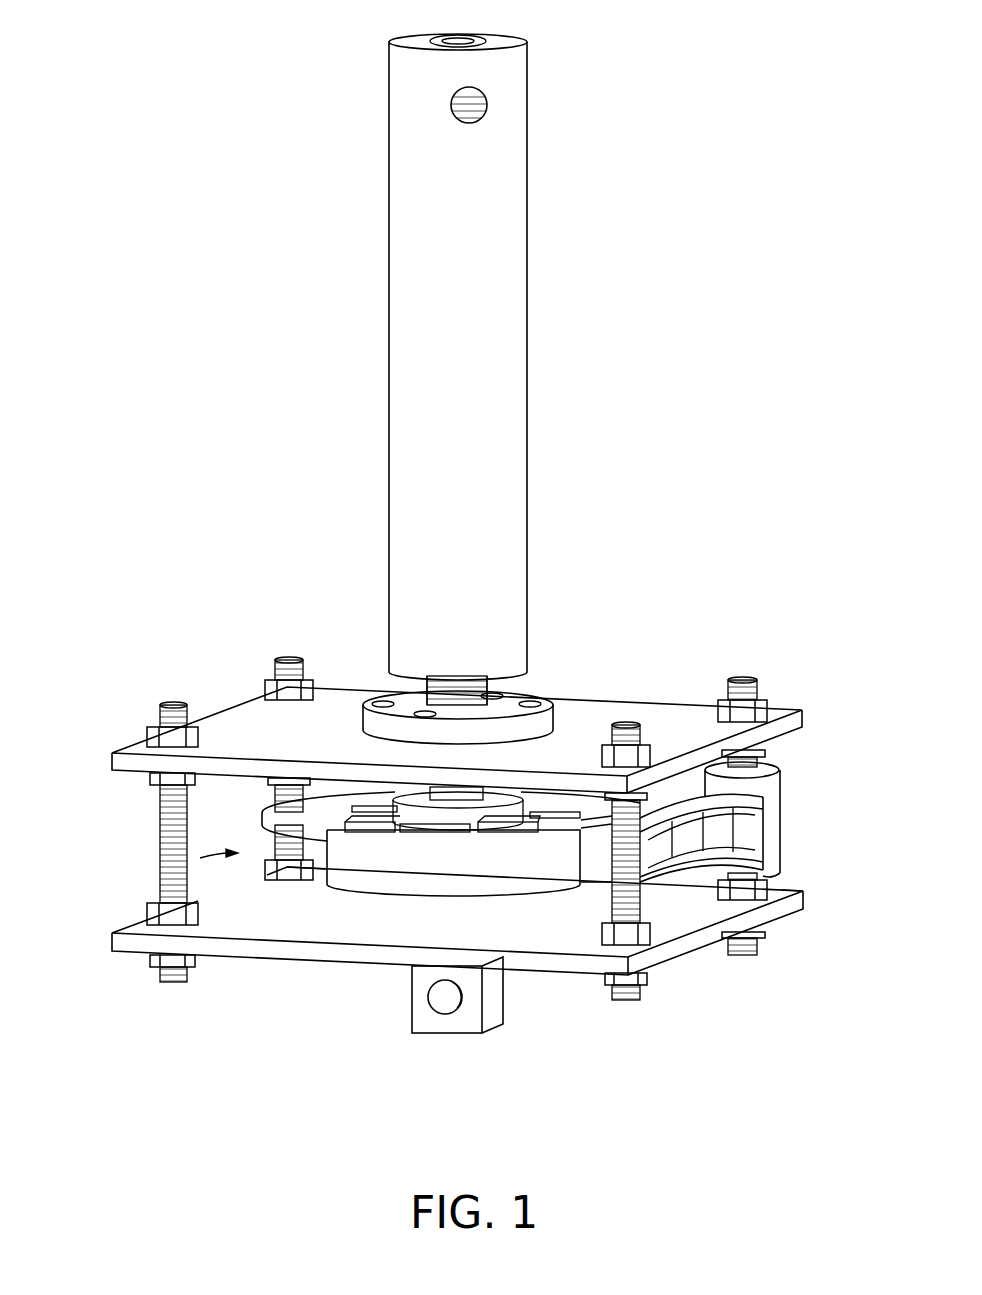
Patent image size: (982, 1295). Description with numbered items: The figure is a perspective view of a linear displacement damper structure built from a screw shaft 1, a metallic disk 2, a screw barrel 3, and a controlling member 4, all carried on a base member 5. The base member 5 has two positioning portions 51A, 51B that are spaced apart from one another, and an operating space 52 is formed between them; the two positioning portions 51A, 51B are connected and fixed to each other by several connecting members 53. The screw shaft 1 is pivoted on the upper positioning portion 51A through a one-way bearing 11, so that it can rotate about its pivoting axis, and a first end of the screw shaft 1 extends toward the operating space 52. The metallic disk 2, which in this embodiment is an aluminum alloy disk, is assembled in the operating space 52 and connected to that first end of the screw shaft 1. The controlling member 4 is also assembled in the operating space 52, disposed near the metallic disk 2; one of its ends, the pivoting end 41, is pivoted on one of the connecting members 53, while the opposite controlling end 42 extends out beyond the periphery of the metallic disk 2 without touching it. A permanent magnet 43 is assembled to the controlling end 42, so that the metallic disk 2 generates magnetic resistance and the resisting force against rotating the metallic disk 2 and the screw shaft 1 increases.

The screw shaft 1 is at (487, 697).
The one-way bearing 11 is at (368, 708).
The metallic disk 2 is at (275, 812).
The screw barrel 3 is at (513, 297).
The controlling member 4 is at (568, 906).
The pivoting end 41 is at (778, 822).
The controlling end 42 is at (357, 878).
The permanent magnet 43 is at (405, 830).
The base member 5 is at (67, 717).
The positioning portion 51A is at (118, 762).
The positioning portion 51B is at (135, 950).
The operating space 52 is at (167, 853).
The connecting members 53 is at (289, 662).